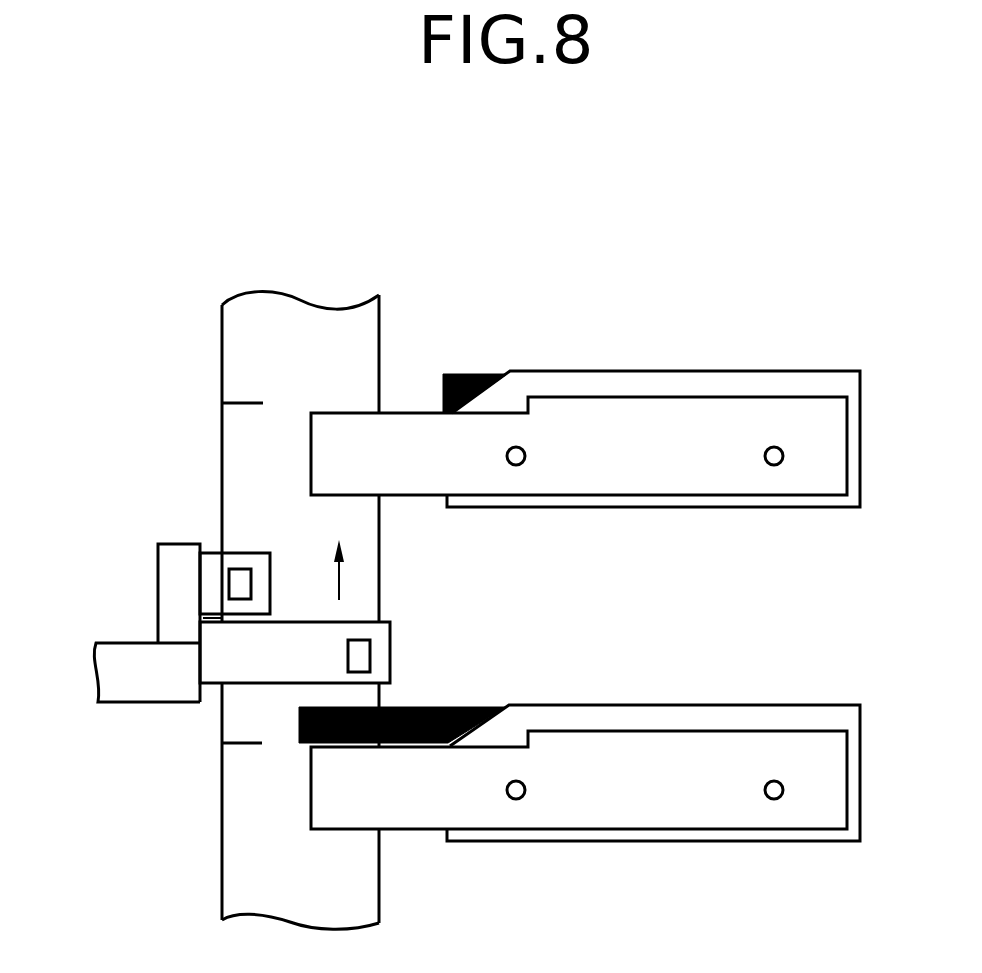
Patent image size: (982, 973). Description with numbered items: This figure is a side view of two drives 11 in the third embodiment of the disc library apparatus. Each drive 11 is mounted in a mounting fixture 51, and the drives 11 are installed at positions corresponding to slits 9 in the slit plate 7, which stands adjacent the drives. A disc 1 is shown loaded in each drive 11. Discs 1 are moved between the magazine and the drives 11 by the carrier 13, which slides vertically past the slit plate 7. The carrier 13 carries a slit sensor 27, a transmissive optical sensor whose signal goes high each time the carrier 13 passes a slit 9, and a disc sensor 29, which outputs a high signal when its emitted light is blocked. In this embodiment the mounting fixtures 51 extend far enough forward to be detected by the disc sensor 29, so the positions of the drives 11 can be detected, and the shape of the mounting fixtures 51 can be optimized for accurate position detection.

The disc 1 is at (465, 375).
The slit plate 7 is at (312, 322).
The slit 9 is at (257, 400).
The drive 11 is at (695, 385).
The carrier 13 is at (133, 643).
The slit sensor 27 is at (242, 580).
The disc sensor 29 is at (370, 657).
The mounting fixture 51 is at (587, 472).